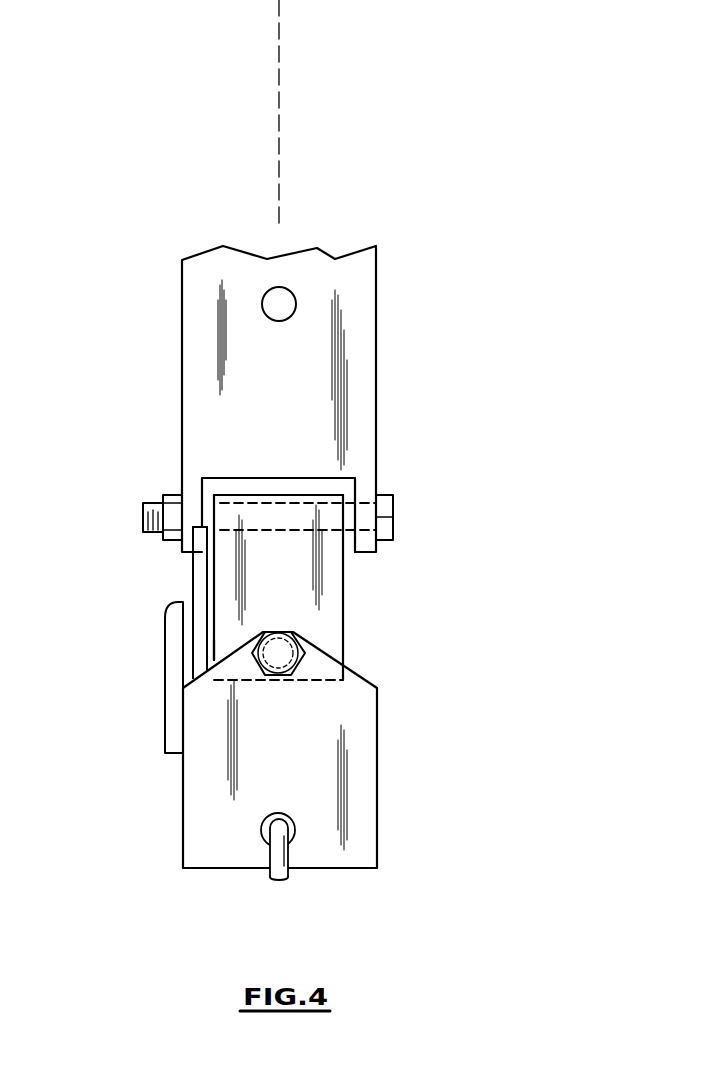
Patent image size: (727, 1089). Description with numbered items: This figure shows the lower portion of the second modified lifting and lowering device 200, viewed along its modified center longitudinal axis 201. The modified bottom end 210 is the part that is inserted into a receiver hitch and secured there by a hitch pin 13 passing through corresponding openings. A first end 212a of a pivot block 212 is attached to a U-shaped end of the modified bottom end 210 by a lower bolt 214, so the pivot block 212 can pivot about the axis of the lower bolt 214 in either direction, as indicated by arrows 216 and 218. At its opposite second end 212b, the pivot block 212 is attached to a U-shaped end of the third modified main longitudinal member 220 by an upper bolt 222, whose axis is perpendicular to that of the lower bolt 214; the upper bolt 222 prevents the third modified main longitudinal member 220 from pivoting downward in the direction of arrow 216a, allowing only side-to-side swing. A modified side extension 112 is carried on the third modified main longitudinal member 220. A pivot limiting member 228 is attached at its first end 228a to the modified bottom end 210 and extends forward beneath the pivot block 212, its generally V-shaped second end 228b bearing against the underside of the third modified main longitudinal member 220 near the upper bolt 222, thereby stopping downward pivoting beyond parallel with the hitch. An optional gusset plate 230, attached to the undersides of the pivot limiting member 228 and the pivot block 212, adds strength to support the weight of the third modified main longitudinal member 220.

The second modified lifting and lowering device 200 is at (481, 268).
The modified center longitudinal axis 201 is at (279, 15).
The arrow 216 is at (188, 583).
The arrow 216a is at (170, 302).
The third modified main longitudinal member 220 is at (323, 415).
The modified side extension 112 is at (283, 305).
The pivot block 212 is at (240, 583).
The first end of pivot block 212a is at (200, 660).
The second end of pivot block 212b is at (237, 497).
The upper bolt 222 is at (393, 517).
The pivot limiting member 228 is at (192, 593).
The first end of pivot limiting member 228a is at (201, 668).
The second end of pivot limiting member 228b is at (197, 527).
The gusset plate 230 is at (174, 652).
The arrow 218 is at (355, 581).
The modified bottom end 210 is at (362, 753).
The lower bolt 214 is at (293, 643).
The hitch pin 13 is at (283, 880).